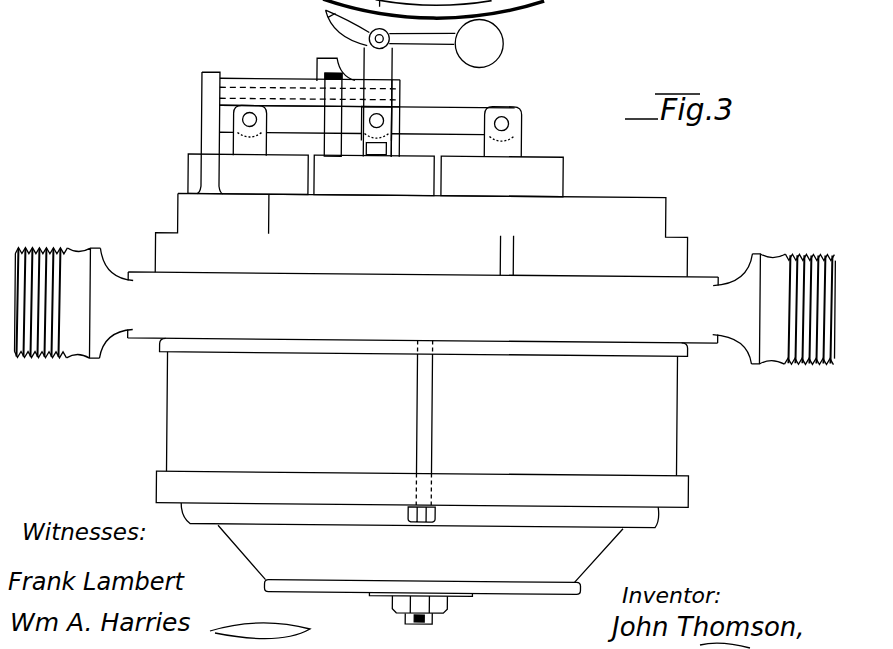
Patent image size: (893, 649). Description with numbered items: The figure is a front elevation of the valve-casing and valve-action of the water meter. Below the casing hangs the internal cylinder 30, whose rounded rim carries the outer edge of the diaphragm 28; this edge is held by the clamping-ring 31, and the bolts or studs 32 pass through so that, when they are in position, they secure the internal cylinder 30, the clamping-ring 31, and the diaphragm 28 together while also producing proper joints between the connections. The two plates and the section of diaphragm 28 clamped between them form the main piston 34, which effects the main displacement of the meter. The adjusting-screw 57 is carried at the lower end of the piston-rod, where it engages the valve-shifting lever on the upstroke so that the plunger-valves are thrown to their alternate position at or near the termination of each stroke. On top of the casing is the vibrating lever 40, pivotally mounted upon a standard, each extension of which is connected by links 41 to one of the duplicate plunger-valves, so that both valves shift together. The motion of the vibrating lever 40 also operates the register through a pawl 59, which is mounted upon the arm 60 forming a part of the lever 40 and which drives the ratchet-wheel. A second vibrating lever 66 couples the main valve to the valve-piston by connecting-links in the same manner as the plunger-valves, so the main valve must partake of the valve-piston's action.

The diaphragm 28 is at (600, 548).
The internal cylinder 30 is at (680, 415).
The clamping-ring 31 is at (682, 492).
The bolts or studs 32 is at (428, 438).
The main piston 34 is at (317, 590).
The vibrating lever 40 is at (366, 120).
The links 41 is at (342, 108).
The adjusting-screw 57 is at (438, 618).
The pawl 59 is at (415, 40).
The arm 60 is at (377, 93).
The vibrating lever 66 is at (315, 62).